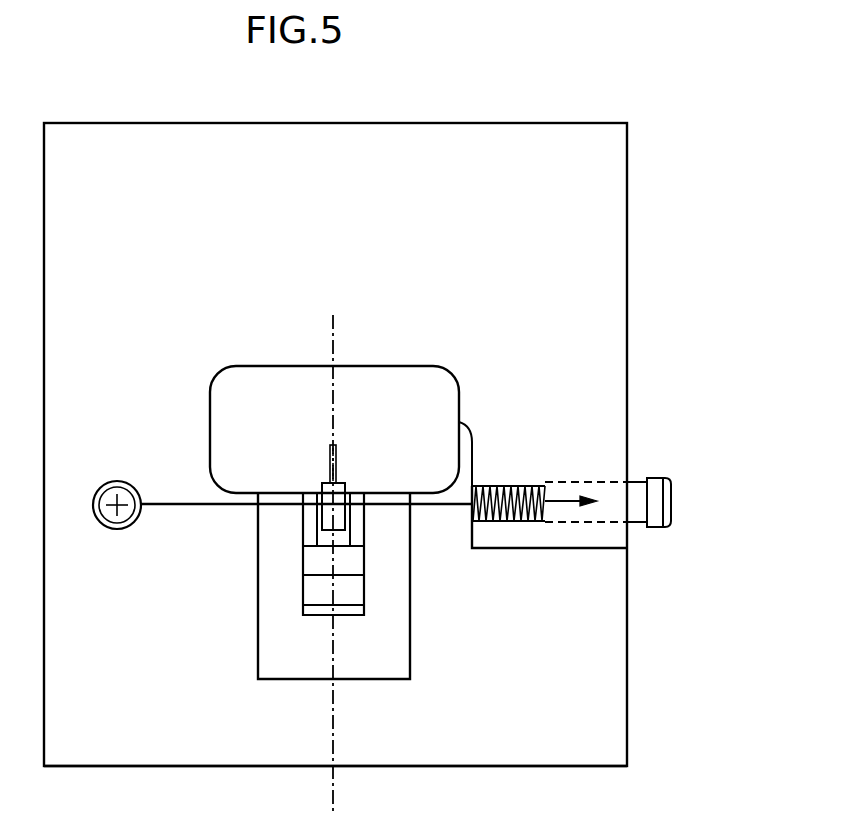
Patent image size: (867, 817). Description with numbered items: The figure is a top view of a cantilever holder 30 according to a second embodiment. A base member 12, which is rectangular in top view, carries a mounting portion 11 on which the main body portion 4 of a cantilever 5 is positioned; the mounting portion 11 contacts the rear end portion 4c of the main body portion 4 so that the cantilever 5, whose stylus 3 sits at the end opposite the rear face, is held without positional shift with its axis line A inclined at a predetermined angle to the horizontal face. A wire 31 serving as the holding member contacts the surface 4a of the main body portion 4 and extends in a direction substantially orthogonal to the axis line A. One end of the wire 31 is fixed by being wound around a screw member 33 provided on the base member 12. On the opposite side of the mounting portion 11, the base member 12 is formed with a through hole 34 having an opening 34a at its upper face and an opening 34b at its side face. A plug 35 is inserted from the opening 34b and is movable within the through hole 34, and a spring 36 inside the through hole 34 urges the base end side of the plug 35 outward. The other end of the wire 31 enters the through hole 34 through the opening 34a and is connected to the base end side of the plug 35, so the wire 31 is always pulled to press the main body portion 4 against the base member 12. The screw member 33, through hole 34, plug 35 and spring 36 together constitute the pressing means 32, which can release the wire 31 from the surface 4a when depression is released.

The cantilever holder 30 is at (657, 200).
The base member 12 is at (516, 752).
The axis line A is at (333, 332).
The stylus 3 is at (337, 447).
The cantilever 5 is at (337, 465).
The main body portion 4 is at (325, 484).
The surface of the main body portion 4a is at (340, 496).
The rear end portion of the main body portion 4c is at (338, 531).
The mounting portion 11 is at (318, 539).
The wire 31 is at (213, 506).
The screw member 33 is at (126, 496).
The opening at the upper face 34a is at (474, 499).
The spring 36 is at (512, 522).
The through hole 34 is at (574, 521).
The opening at the side face 34b is at (631, 523).
The pressing means 32 is at (667, 466).
The plug 35 is at (668, 518).